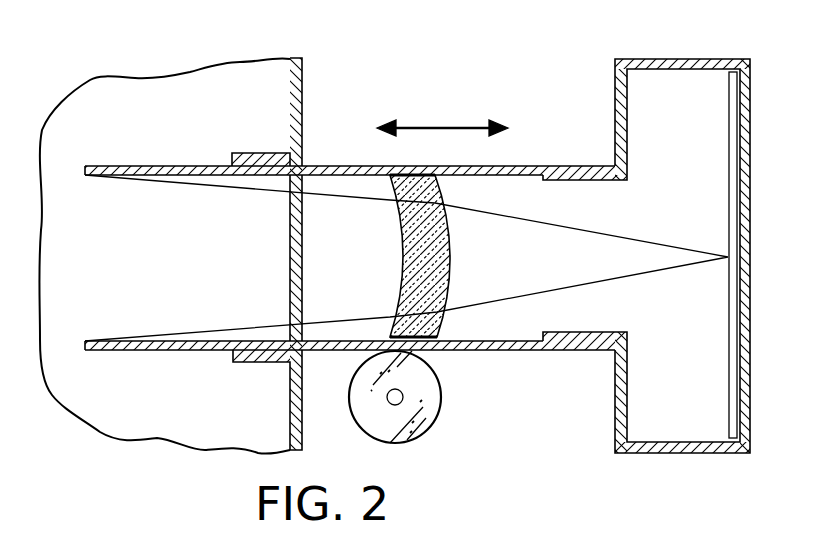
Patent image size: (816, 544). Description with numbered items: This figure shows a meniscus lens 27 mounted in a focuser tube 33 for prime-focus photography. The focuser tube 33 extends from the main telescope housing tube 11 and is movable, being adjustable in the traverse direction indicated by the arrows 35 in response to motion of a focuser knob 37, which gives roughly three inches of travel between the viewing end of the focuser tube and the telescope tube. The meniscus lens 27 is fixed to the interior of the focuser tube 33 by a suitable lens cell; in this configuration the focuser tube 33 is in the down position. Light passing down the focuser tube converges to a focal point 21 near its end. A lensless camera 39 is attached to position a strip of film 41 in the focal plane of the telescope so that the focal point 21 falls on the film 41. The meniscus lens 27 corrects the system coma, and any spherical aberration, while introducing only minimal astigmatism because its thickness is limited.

The housing tube 11 is at (302, 88).
The focal point 21 is at (728, 255).
The meniscus lens 27 is at (403, 232).
The focuser tube 33 is at (488, 351).
The arrows 35 is at (440, 126).
The focuser knob 37 is at (428, 428).
The lensless camera 39 is at (667, 58).
The strip of film 41 is at (729, 120).